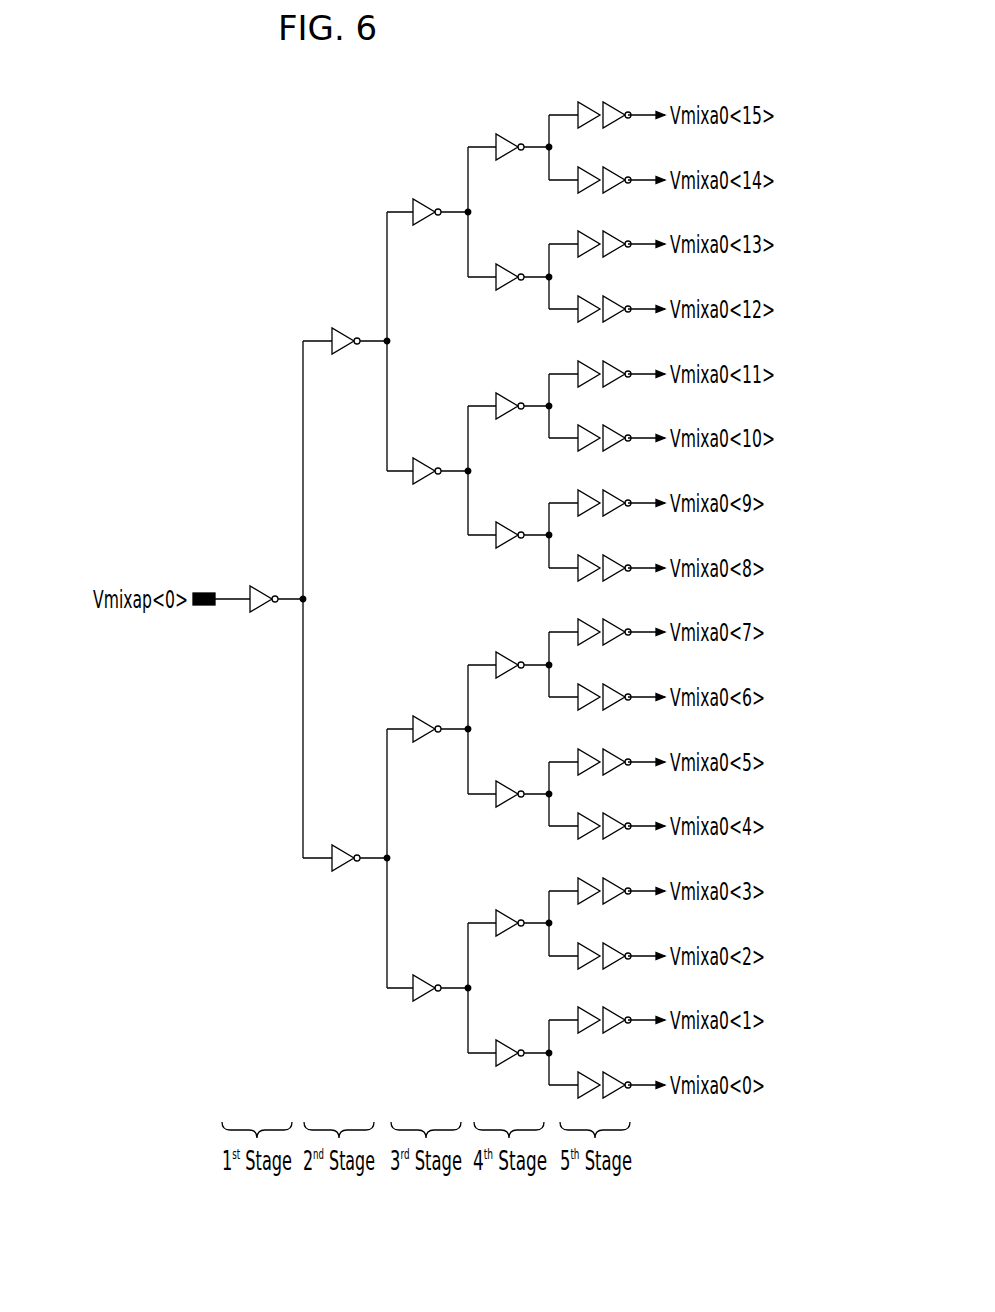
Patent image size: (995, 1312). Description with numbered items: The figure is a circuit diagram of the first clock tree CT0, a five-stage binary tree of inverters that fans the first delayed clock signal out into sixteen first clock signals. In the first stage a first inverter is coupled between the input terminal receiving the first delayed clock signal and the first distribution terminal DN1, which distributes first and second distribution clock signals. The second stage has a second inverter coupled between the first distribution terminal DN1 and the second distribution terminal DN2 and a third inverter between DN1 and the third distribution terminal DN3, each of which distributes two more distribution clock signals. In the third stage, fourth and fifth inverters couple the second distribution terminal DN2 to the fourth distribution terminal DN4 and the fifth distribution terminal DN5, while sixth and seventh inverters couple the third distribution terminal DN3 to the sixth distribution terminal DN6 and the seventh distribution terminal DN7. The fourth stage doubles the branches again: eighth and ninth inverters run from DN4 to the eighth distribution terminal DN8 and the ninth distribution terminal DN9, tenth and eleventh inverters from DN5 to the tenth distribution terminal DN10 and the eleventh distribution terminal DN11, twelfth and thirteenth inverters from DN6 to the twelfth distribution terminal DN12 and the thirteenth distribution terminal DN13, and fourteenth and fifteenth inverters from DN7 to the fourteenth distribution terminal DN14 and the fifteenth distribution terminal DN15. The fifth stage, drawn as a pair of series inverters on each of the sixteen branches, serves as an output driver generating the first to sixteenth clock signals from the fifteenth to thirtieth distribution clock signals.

The first clock tree CT0 is at (78, 131).
The first distribution terminal DN1 is at (302, 600).
The second distribution terminal DN2 is at (370, 859).
The third distribution terminal DN3 is at (370, 342).
The fourth distribution terminal DN4 is at (453, 989).
The fifth distribution terminal DN5 is at (453, 730).
The sixth distribution terminal DN6 is at (453, 472).
The seventh distribution terminal DN7 is at (453, 213).
The eighth distribution terminal DN8 is at (535, 1052).
The ninth distribution terminal DN9 is at (535, 922).
The tenth distribution terminal DN10 is at (540, 793).
The eleventh distribution terminal DN11 is at (539, 664).
The twelfth distribution terminal DN12 is at (539, 534).
The thirteenth distribution terminal DN13 is at (540, 405).
The fourteenth distribution terminal DN14 is at (540, 276).
The fifteenth distribution terminal DN15 is at (540, 146).